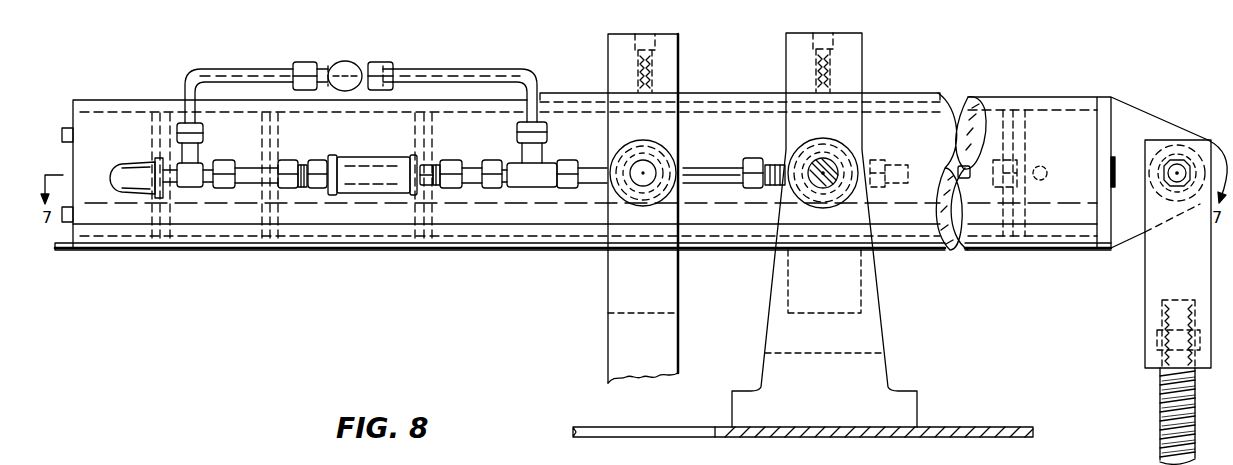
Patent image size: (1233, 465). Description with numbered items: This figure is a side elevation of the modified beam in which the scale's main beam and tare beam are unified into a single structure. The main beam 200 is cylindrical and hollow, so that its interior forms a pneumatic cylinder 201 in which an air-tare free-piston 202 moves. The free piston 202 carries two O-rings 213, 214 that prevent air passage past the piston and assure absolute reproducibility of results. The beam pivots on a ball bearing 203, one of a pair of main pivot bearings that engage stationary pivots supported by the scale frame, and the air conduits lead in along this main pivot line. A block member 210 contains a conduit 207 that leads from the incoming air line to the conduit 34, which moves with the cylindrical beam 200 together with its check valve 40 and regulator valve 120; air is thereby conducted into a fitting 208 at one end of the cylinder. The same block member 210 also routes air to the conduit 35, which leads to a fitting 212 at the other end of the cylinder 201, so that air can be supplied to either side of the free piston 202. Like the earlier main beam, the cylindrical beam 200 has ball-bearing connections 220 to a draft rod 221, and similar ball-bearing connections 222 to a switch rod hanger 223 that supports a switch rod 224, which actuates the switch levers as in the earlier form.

The main beam 200 is at (371, 256).
The pneumatic cylinder 201 is at (995, 103).
The air-tare free-piston 202 is at (398, 213).
The ball bearing 203 is at (848, 148).
The conduit 207 is at (833, 191).
The fitting 208 is at (131, 162).
The block member 210 is at (862, 64).
The fitting 212 is at (1034, 162).
The O-ring 213 is at (280, 127).
The O-ring 214 is at (424, 130).
The ball-bearing connection 220 is at (660, 199).
The draft rod 221 is at (620, 348).
The ball-bearing connection 222 is at (1185, 147).
The switch rod hanger 223 is at (1155, 276).
The switch rod 224 is at (1163, 421).
The regulator valve 120 is at (343, 62).
The check valve 40 is at (386, 160).
The conduit 34 is at (722, 168).
The conduit 35 is at (962, 166).